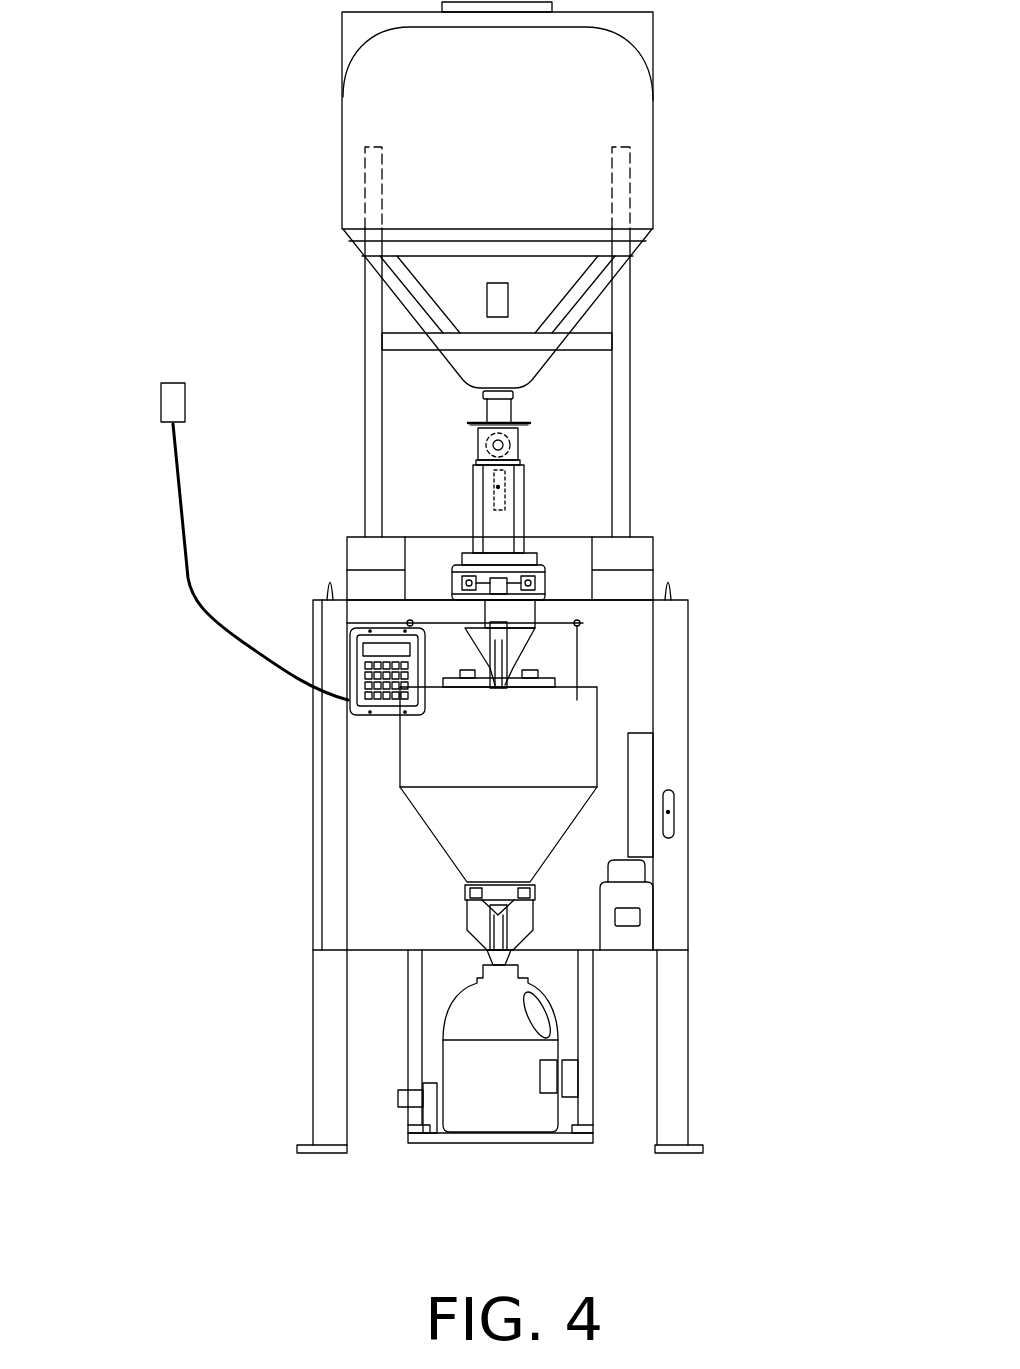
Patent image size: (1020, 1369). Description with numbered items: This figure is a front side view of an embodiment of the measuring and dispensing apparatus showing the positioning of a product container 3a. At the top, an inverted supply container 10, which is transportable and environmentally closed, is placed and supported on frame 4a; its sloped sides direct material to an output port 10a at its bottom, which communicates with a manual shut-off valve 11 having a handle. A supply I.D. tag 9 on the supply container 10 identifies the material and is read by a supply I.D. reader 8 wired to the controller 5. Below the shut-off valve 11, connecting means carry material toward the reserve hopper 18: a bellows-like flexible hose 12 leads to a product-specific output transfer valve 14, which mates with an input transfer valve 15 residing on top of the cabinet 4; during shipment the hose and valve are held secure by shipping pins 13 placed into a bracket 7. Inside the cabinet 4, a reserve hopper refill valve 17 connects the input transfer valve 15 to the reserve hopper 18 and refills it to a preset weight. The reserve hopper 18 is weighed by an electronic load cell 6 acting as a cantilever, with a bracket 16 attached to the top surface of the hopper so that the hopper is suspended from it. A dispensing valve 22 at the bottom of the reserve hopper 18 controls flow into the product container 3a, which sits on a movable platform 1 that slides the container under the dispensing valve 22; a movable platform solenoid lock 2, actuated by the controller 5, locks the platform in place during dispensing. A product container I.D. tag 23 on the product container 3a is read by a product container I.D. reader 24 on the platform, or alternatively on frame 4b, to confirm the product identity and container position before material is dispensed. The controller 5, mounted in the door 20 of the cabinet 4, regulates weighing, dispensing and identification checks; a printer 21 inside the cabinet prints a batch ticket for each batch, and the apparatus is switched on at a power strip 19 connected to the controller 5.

The movable platform 1 is at (408, 1145).
The movable platform solenoid lock 2 is at (398, 1095).
The product container 3a is at (445, 1010).
The cabinet 4 is at (313, 881).
The frame 4a is at (366, 351).
The frame 4b is at (597, 1093).
The controller 5 is at (372, 713).
The electronic load cell 6 is at (457, 617).
The bracket 7 is at (478, 428).
The supply I.D. reader 8 is at (160, 393).
The supply I.D. tag 9 is at (488, 296).
The supply container 10 is at (368, 83).
The output port 10a is at (527, 400).
The shut-off valve 11 is at (520, 433).
The flexible hose 12 is at (500, 520).
The shipping pins 13 is at (480, 465).
The output transfer valve 14 is at (535, 557).
The input transfer valve 15 is at (550, 598).
The bracket 16 is at (578, 648).
The reserve hopper refill valve 17 is at (560, 662).
The reserve hopper 18 is at (600, 735).
The power strip 19 is at (650, 755).
The door 20 is at (673, 815).
The printer 21 is at (640, 910).
The dispensing valve 22 is at (530, 905).
The product container I.D. tag 23 is at (557, 1072).
The product container I.D. reader 24 is at (568, 1078).